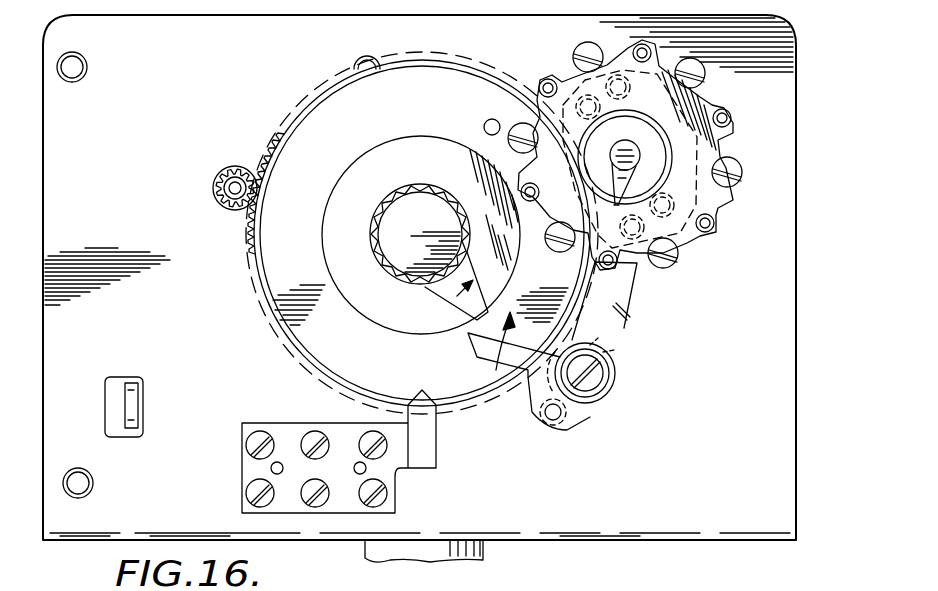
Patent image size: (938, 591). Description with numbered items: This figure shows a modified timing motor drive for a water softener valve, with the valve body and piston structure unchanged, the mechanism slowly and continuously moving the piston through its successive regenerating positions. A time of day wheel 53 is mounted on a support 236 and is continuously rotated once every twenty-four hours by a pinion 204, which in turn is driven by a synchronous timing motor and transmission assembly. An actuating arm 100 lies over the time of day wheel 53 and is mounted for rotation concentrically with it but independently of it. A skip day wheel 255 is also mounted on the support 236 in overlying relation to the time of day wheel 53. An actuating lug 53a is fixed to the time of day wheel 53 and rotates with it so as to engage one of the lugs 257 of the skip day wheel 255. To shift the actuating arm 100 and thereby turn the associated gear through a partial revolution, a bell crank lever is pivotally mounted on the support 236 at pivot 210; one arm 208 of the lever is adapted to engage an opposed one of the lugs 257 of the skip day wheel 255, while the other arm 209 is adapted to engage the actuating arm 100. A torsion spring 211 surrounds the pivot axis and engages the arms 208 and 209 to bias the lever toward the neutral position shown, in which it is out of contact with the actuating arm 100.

The time of day wheel 53 is at (337, 95).
The actuating lug 53a is at (485, 120).
The actuating arm 100 is at (450, 293).
The pinion 204 is at (215, 196).
The arm of bell crank lever 208 is at (630, 293).
The arm of bell crank lever 209 is at (516, 364).
The pivot 210 is at (596, 382).
The torsion spring 211 is at (560, 430).
The support 236 is at (797, 98).
The skip day wheel 255 is at (692, 106).
The lugs of skip day wheel 257 is at (705, 238).